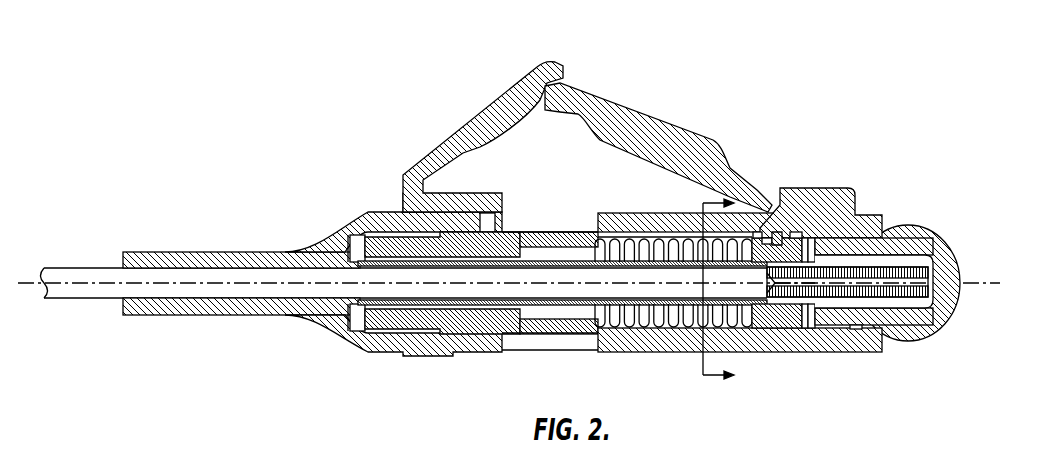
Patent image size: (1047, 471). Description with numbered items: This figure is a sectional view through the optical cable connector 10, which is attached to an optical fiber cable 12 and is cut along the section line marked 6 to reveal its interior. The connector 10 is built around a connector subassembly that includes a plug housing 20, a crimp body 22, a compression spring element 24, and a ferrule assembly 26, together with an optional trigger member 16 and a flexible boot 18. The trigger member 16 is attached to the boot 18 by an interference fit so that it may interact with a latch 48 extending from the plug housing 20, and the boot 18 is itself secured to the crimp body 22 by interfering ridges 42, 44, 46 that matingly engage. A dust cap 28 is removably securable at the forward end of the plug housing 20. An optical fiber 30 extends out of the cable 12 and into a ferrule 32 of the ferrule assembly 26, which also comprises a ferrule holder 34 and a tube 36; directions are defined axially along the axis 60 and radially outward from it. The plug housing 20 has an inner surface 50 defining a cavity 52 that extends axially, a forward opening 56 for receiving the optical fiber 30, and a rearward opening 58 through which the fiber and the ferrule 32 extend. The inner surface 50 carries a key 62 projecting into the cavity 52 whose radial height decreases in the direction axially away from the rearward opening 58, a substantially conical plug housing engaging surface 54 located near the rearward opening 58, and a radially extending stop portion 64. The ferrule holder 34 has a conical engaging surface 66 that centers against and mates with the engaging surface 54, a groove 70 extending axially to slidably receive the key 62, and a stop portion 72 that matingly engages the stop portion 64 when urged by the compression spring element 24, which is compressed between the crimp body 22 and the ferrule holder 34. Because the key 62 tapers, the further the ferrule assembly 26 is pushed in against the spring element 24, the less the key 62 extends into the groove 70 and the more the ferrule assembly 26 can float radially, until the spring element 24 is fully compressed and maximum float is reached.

The connector 10 is at (760, 71).
The optical fiber cable 12 is at (97, 302).
The trigger member 16 is at (403, 202).
The flexible boot 18 is at (230, 315).
The plug housing 20 is at (823, 347).
The crimp body 22 is at (373, 330).
The compression spring element 24 is at (750, 236).
The ferrule assembly 26 is at (825, 263).
The dust cap 28 is at (957, 260).
The optical fiber 30 is at (917, 242).
The ferrule 32 is at (947, 303).
The ferrule holder 34 is at (777, 310).
The tube 36 is at (660, 340).
The interfering ridge 42 is at (470, 240).
The interfering ridge 44 is at (530, 232).
The interfering ridge 46 is at (498, 226).
The latch 48 is at (657, 133).
The inner surface 50 is at (803, 330).
The cavity 52 is at (757, 237).
The plug housing engaging surface 54 is at (813, 313).
The forward opening 56 is at (527, 310).
The rearward opening 58 is at (898, 278).
The axis 60 is at (20, 280).
The key 62 is at (775, 237).
The stop portion 64 is at (795, 240).
The engaging surface 66 is at (825, 243).
The groove 70 is at (768, 238).
The stop portion 72 is at (765, 325).
The section line 6- 6 is at (727, 289).